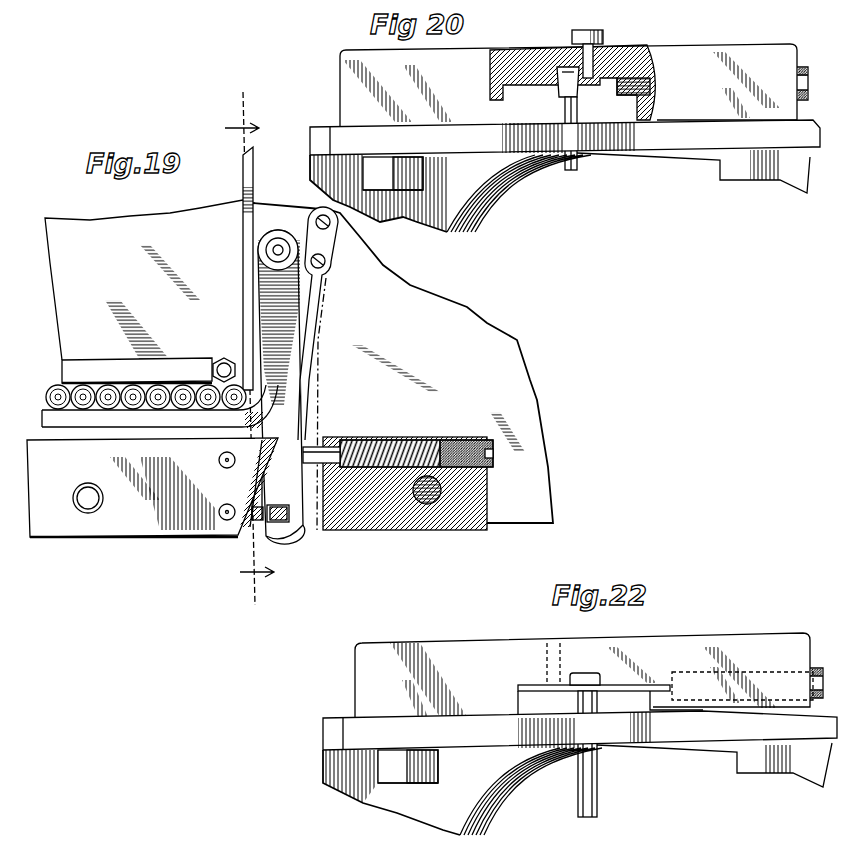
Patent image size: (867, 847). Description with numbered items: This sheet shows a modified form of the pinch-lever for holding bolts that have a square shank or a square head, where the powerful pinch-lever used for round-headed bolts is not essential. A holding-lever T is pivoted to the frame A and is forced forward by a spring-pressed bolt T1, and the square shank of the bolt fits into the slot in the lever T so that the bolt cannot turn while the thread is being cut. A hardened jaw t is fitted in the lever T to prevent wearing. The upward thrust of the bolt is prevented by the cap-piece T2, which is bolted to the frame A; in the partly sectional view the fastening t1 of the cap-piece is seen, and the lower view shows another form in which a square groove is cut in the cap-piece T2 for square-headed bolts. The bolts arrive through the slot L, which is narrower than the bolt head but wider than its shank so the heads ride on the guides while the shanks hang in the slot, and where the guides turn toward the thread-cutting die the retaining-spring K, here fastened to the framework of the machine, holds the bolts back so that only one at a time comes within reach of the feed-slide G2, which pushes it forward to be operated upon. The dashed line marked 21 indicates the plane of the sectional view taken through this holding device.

In FIG. 19, the frame A is at (299, 361).
In FIG. 20, the frame A is at (565, 176).
In FIG. 22, the frame A is at (580, 773).
In FIG. 19, the holding-lever T is at (281, 387).
In FIG. 19, the spring-pressed bolt T1 is at (348, 437).
In FIG. 19, the cap-piece T2 is at (152, 447).
In FIG. 20, the cap-piece T2 is at (574, 85).
In FIG. 22, the cap-piece T2 is at (589, 675).
In FIG. 19, the hardened jaw t is at (288, 507).
In FIG. 20, the screw t1 is at (580, 100).
In FIG. 22, the screw t1 is at (585, 745).
In FIG. 19, the retaining-spring K is at (311, 324).
In FIG. 19, the slot L is at (46, 400).
In FIG. 19, the feed-slide G2 is at (253, 333).
In FIG. 19, the section line 21 is at (249, 352).